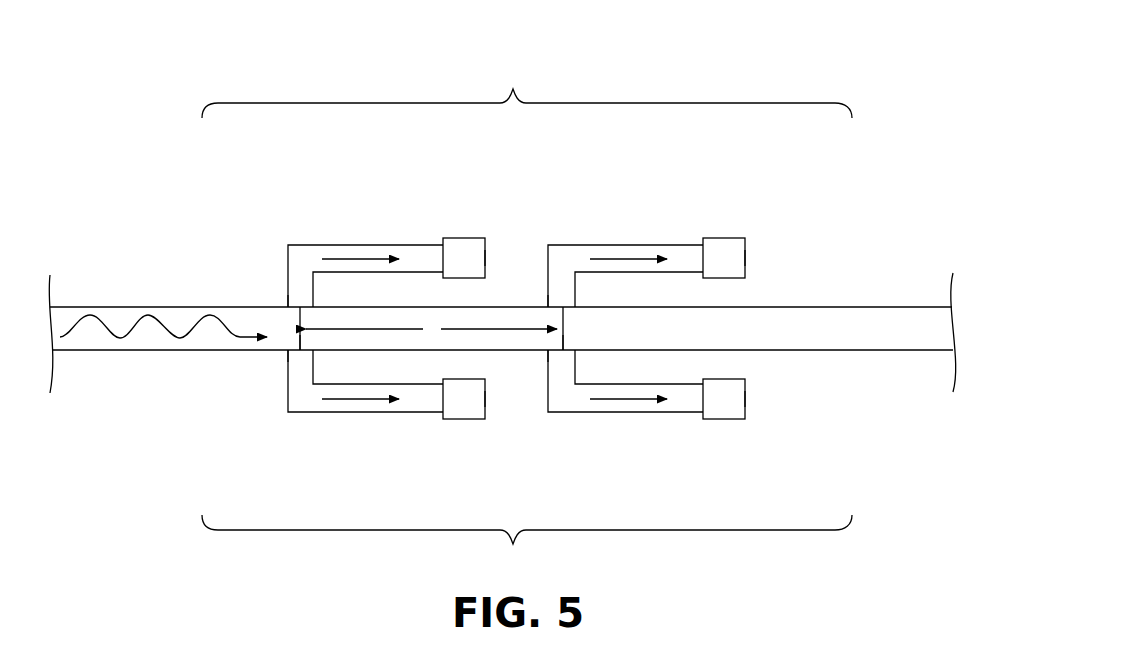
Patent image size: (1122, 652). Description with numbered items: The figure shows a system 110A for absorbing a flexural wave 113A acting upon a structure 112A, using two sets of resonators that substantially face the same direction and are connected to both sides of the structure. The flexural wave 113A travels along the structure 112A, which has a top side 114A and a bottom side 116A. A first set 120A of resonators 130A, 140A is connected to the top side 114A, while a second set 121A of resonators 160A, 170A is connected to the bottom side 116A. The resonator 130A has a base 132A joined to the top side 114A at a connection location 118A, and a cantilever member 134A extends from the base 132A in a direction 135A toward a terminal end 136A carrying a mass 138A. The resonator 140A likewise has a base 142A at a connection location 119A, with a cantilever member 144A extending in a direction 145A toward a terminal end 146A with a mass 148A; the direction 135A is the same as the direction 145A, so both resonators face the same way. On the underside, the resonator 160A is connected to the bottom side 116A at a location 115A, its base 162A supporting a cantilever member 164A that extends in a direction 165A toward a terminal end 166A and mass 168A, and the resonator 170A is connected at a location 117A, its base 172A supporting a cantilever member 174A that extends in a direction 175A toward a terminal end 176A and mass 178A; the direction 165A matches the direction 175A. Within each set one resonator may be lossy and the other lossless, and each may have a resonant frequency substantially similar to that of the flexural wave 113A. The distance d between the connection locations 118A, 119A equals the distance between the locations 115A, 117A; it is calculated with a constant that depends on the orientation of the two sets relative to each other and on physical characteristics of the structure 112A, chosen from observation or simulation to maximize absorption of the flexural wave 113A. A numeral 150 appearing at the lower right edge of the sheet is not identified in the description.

The system 110A is at (789, 73).
The structure 112A is at (864, 327).
The flexural wave 113A is at (120, 337).
The top side 114A is at (792, 307).
The location 115A is at (308, 350).
The bottom side 116A is at (880, 350).
The location 117A is at (567, 348).
The connection location 118A is at (297, 309).
The connection location 119A is at (566, 309).
The first set of resonators 120A is at (527, 90).
The second set of resonators 121A is at (527, 541).
The resonator 130A is at (355, 163).
The base 132A is at (297, 287).
The cantilever member 134A is at (307, 250).
The direction 135A is at (356, 255).
The terminal end 136A is at (486, 258).
The mass 138A is at (462, 247).
The resonator 140A is at (694, 191).
The base 142A is at (562, 292).
The cantilever member 144A is at (583, 247).
The direction 145A is at (627, 247).
The terminal end 146A is at (747, 258).
The mass 148A is at (723, 247).
The controller 150 is at (750, 651).
The resonator 160A is at (262, 422).
The base 162A is at (297, 368).
The cantilever member 164A is at (311, 405).
The direction 165A is at (350, 403).
The terminal end 166A is at (486, 400).
The mass 168A is at (460, 420).
The resonator 170A is at (786, 430).
The base 172A is at (612, 363).
The cantilever member 174A is at (583, 405).
The direction 175A is at (624, 403).
The terminal end 176A is at (779, 388).
The mass 178A is at (730, 418).